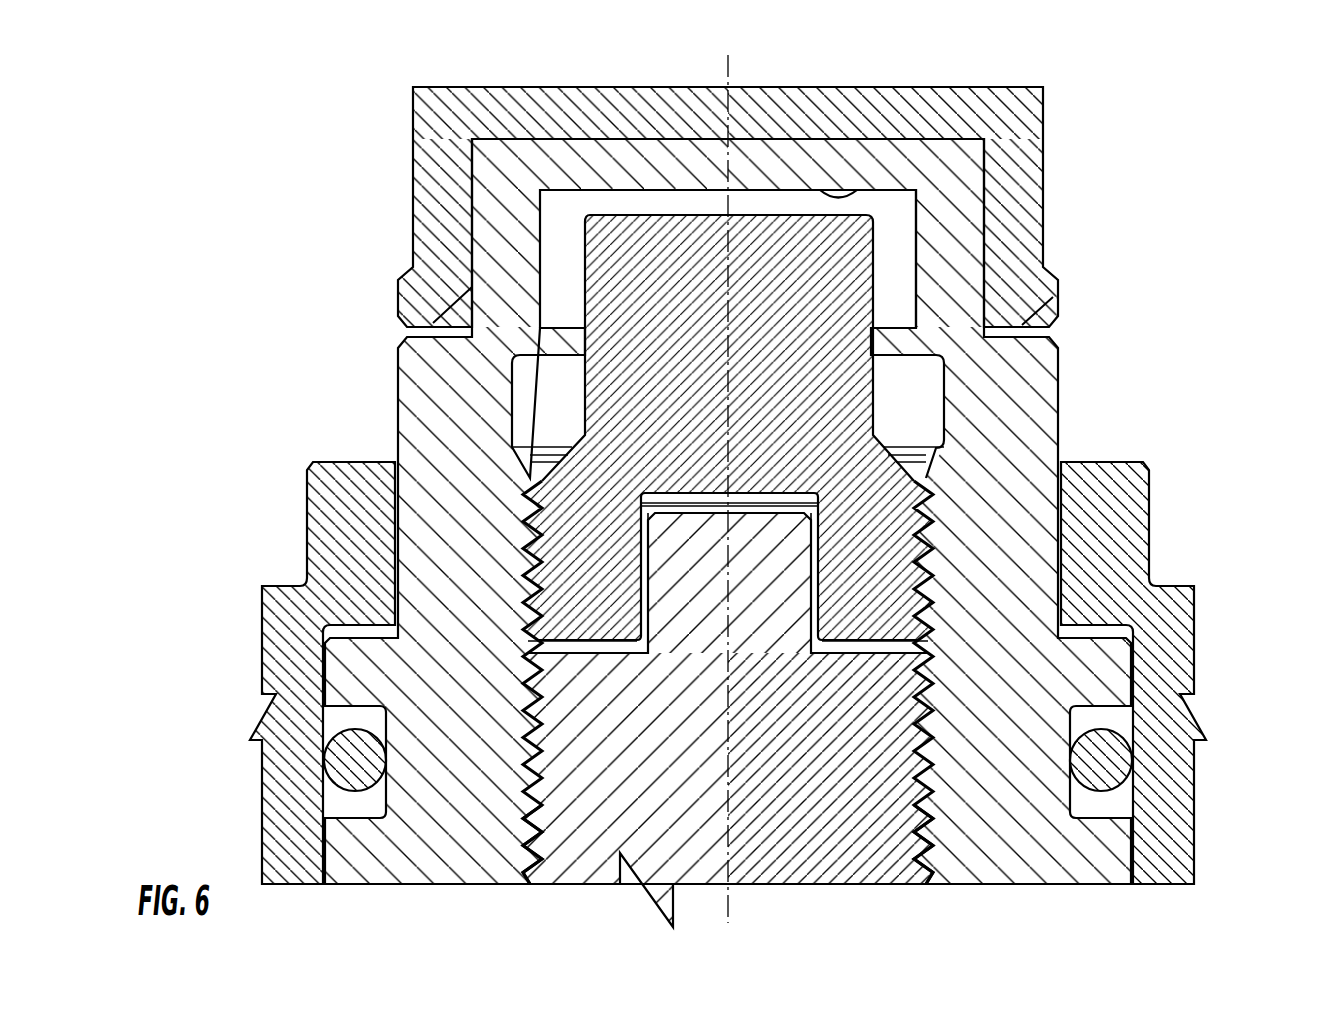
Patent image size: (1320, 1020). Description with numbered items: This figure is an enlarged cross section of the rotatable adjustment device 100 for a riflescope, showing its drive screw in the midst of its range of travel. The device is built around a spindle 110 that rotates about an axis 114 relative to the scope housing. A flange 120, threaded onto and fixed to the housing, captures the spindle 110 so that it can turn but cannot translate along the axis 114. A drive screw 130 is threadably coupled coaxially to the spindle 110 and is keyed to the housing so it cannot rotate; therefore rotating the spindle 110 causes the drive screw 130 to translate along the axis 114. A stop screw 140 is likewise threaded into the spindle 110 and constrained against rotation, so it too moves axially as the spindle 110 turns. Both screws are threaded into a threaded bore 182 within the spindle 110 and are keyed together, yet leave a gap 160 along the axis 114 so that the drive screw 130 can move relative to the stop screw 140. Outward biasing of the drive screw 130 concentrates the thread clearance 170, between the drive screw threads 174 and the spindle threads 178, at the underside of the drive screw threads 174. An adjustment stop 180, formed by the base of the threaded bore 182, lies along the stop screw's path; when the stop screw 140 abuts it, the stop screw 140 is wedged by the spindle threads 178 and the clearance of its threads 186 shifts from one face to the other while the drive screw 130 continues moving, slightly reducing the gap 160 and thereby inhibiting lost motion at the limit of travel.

The rotatable adjustment device 100 is at (1184, 121).
The spindle 110 is at (413, 363).
The axis 114 is at (728, 74).
The flange 120 is at (1140, 527).
The drive screw 130 is at (880, 866).
The stop screw 140 is at (857, 266).
The gap 160 is at (777, 500).
The thread clearance 170 is at (530, 846).
The drive screw threads 174 is at (930, 842).
The spindle threads 178 is at (917, 788).
The adjustment stop 180 is at (847, 196).
The threaded bore 182 is at (550, 200).
The threads 186 is at (528, 497).